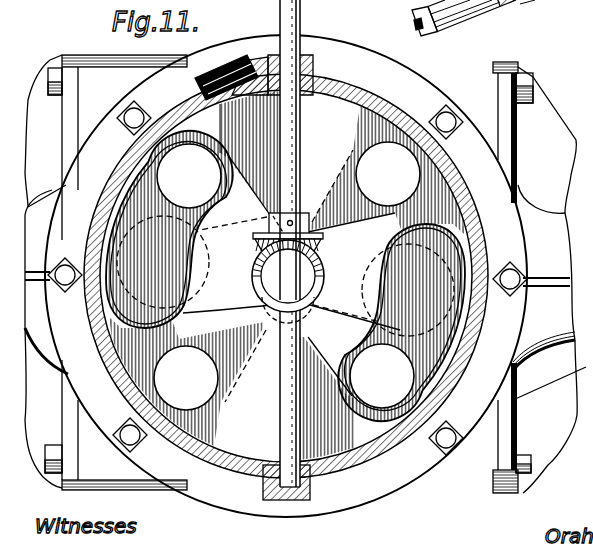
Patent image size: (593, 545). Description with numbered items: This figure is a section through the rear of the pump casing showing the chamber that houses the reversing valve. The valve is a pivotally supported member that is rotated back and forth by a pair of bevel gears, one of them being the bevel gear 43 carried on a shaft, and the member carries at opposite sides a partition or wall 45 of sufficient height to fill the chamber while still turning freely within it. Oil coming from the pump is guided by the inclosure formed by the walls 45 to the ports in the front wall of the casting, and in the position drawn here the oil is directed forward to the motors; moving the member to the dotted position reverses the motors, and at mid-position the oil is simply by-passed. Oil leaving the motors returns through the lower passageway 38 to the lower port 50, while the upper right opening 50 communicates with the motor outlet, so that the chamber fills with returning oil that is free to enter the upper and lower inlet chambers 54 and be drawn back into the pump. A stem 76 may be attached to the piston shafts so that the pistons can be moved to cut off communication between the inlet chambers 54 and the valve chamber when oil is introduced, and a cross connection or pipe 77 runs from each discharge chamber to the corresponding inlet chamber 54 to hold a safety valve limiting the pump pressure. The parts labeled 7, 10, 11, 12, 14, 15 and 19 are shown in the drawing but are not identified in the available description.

The frame 7 is at (63, 412).
The casing flange 10 is at (365, 114).
The rotor body 11 is at (245, 190).
The port opening 12 is at (364, 190).
The shaft 14 is at (280, 8).
The rotor vane 15 is at (333, 298).
The bolts 19 is at (118, 132).
The passageway 38 is at (120, 55).
The bevel gear 43 is at (321, 262).
The partition or wall 45 is at (188, 277).
The port 50 is at (456, 169).
The inlet chamber 54 is at (428, 16).
The stem 76 is at (411, 23).
The cross connection or pipe 77 is at (535, 0).